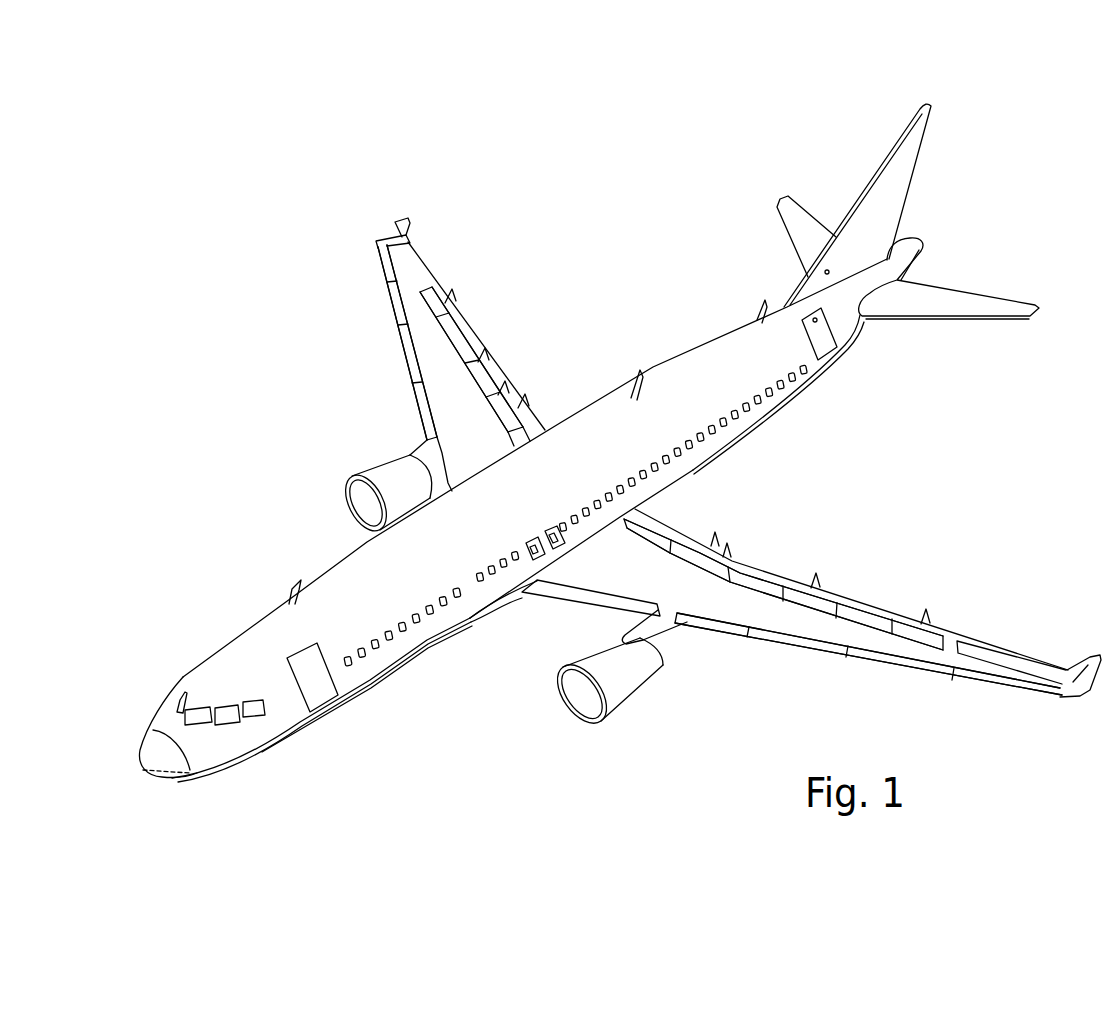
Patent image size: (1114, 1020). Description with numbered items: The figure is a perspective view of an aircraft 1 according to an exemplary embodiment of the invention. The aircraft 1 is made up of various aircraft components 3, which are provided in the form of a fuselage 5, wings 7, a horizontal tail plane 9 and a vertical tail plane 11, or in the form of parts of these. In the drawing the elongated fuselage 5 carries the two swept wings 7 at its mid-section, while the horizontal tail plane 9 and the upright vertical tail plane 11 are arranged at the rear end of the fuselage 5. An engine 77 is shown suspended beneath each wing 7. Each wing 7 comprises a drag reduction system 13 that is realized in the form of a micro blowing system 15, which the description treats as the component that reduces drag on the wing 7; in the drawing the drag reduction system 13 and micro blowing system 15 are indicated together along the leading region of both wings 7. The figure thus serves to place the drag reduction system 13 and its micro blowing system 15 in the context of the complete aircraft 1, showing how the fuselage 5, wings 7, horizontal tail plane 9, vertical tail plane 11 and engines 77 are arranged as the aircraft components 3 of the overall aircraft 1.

The aircraft 1 is at (187, 398).
The aircraft component 3 is at (597, 575).
The fuselage 5 is at (252, 641).
The wing 7 is at (430, 350).
The horizontal tail plane 9 is at (802, 226).
The vertical tail plane 11 is at (900, 148).
The drag reduction system 13 is at (412, 412).
The micro blowing system 15 is at (672, 491).
The engine 77 is at (380, 481).